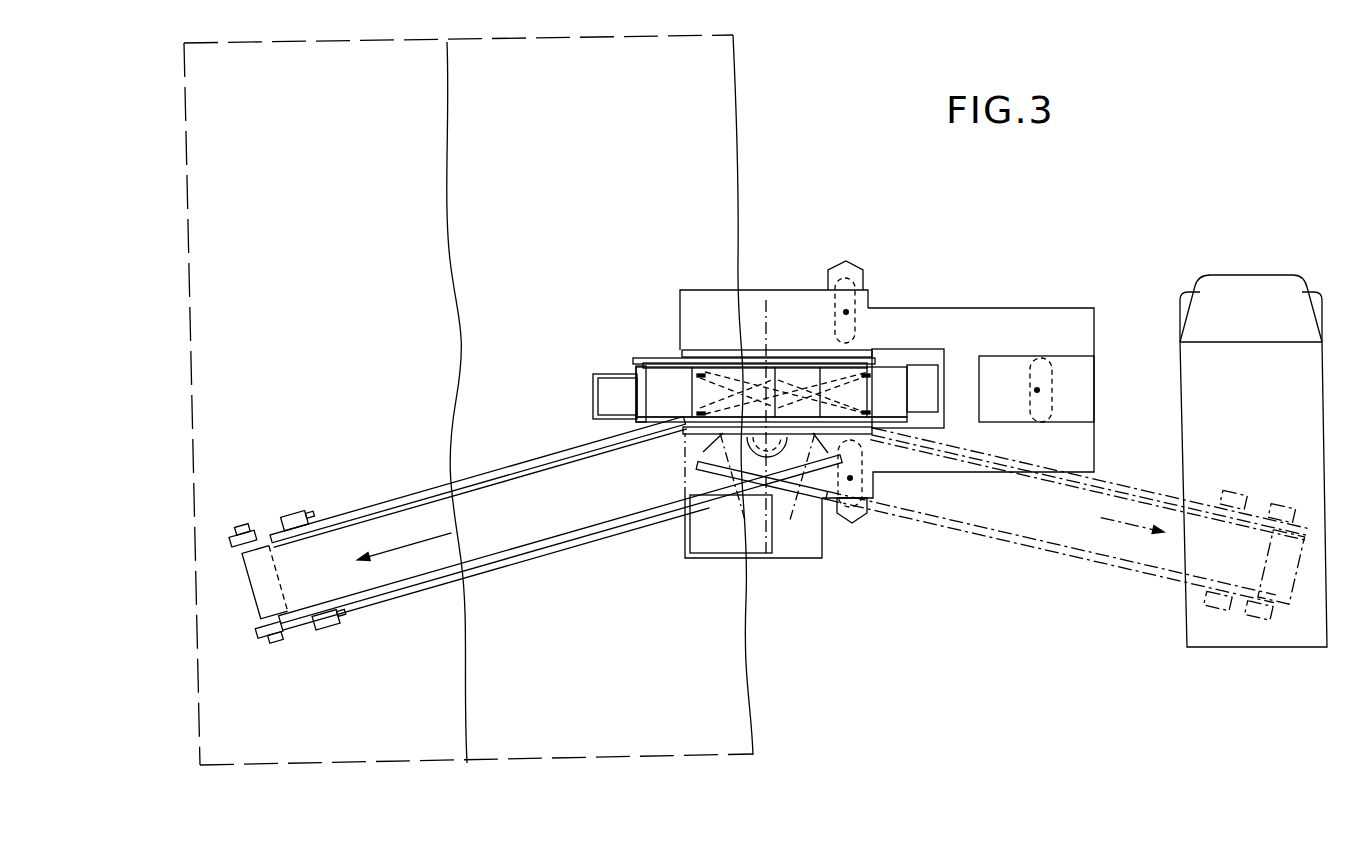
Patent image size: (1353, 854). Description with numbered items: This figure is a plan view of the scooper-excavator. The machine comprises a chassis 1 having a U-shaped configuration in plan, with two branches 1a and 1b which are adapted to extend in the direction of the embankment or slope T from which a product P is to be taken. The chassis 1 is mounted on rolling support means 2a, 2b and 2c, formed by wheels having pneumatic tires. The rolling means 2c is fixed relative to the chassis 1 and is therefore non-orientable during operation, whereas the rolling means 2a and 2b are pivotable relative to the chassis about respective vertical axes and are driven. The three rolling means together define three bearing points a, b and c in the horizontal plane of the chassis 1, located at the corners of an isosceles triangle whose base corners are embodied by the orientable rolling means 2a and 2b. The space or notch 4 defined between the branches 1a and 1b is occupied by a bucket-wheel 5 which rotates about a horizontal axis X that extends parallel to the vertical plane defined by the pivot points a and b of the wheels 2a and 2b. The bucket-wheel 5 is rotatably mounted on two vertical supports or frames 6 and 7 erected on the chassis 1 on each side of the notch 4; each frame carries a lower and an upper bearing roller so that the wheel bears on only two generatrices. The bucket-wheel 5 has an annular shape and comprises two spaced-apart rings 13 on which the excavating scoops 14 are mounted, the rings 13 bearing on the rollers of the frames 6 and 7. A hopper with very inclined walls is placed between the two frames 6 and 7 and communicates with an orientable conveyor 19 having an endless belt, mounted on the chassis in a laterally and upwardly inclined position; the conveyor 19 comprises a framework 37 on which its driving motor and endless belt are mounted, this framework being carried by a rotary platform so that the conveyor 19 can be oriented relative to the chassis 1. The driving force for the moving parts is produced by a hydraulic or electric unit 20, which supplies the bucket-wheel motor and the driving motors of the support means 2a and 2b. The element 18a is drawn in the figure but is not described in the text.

The chassis 1 is at (995, 303).
The branch 1a is at (813, 303).
The branch 1b is at (782, 560).
The rolling support means 2a is at (855, 322).
The rolling support means 2b is at (862, 456).
The rolling support means 2c is at (1052, 404).
The notch 4 is at (912, 353).
The bucket-wheel 5 is at (637, 360).
The frame 6 is at (721, 351).
The frame 7 is at (698, 447).
The ring 13 is at (650, 365).
The excavating scoop 14 is at (603, 402).
The drive housing 18a is at (748, 432).
The conveyor 19 is at (766, 485).
The hydraulic or electric unit 20 is at (1000, 353).
The framework 37 is at (471, 455).
The bearing point a is at (848, 312).
The bearing point b is at (852, 478).
The bearing point c is at (1039, 390).
The horizontal axis X is at (770, 348).
The embankment or slope T is at (556, 229).
The product P is at (320, 243).